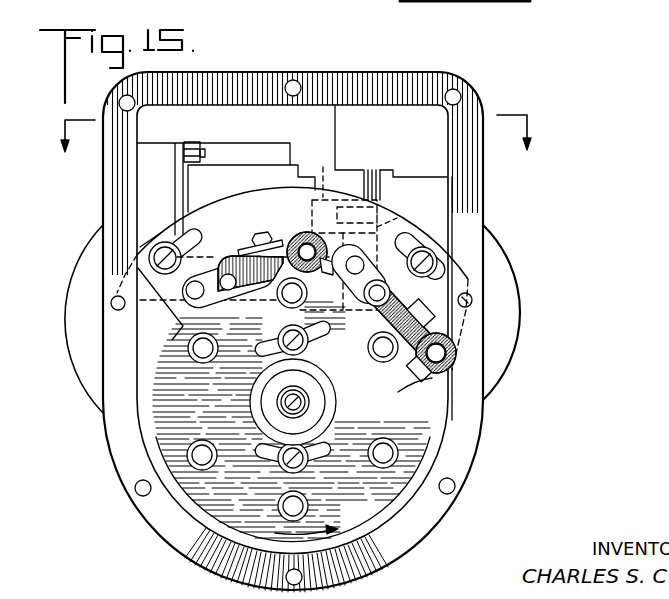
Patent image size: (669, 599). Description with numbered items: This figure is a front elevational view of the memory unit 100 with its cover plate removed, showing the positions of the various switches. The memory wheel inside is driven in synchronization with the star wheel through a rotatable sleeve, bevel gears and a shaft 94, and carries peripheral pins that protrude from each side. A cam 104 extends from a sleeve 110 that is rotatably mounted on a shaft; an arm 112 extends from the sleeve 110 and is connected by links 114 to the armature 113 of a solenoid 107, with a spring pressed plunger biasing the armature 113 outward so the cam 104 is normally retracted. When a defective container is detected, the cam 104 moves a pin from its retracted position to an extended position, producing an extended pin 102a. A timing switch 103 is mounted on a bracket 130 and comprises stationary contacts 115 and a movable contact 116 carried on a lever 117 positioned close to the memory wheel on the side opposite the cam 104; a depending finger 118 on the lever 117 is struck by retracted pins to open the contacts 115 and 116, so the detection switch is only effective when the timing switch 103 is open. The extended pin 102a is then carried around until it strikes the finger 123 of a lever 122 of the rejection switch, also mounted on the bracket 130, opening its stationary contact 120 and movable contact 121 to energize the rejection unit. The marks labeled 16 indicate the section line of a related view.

The section line 16- 16 is at (299, 147).
The shaft 94 is at (282, 407).
The memory unit 100 is at (520, 353).
The extended pin 102a is at (282, 303).
The timing switch 103 is at (287, 250).
The cam 104 is at (368, 346).
The solenoid 107 is at (230, 185).
The sleeve 110 is at (378, 188).
The arm 112 is at (379, 211).
The armature 113 is at (329, 173).
The links 114 is at (398, 217).
The stationary contacts 115 is at (333, 283).
The movable contact 116 is at (344, 216).
The lever 117 is at (250, 272).
The depending finger 118 is at (270, 280).
The stationary contact 120 is at (443, 367).
The movable contact 121 is at (418, 383).
The lever 122 is at (384, 304).
The finger 123 is at (402, 363).
The bracket 130 is at (167, 228).